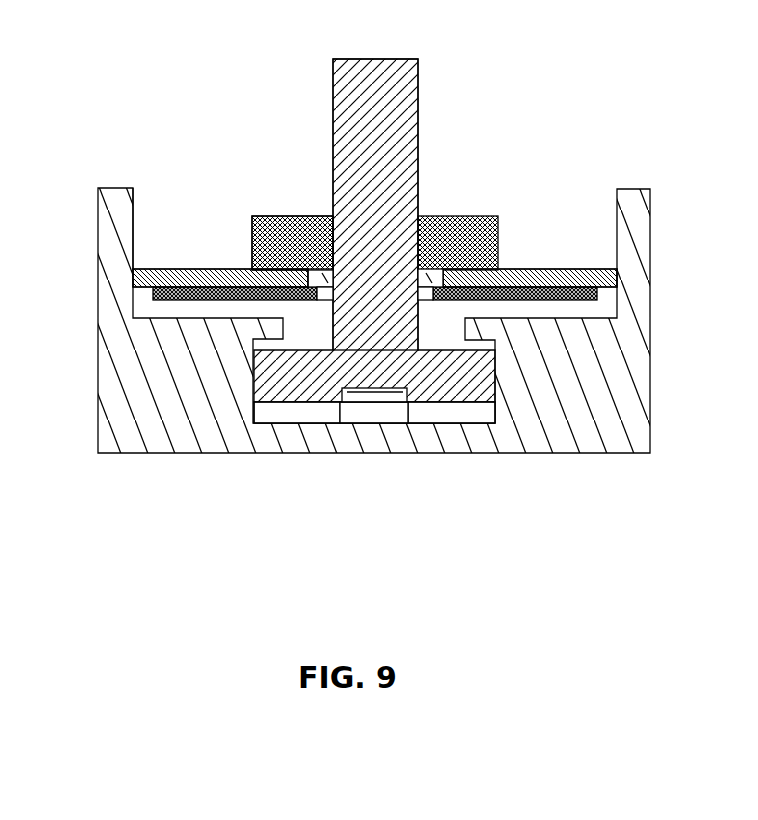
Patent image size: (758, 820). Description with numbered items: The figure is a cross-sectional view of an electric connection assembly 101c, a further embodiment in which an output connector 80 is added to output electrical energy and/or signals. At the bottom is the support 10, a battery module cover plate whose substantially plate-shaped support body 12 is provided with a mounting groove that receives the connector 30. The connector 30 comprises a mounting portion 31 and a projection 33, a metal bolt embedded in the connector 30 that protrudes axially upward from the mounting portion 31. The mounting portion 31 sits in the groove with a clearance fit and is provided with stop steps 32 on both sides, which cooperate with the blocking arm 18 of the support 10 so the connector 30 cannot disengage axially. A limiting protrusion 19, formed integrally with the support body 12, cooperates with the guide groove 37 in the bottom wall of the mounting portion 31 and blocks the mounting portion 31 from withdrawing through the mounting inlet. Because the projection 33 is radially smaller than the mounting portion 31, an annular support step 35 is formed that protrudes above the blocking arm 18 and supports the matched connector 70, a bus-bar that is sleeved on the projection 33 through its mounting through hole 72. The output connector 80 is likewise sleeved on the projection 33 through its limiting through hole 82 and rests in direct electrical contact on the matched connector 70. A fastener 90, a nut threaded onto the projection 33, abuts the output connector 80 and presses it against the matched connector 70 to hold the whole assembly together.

The electric connection assembly 101c is at (390, 30).
The limiting through hole 82 is at (418, 146).
The fastener 90 is at (468, 216).
The output connector 80 is at (587, 270).
The mounting through hole 72 is at (422, 280).
The matched connector 70 is at (547, 270).
The guide groove 37 is at (485, 263).
The projection 33 is at (332, 172).
The support step 35 is at (280, 240).
The stop step 32 is at (240, 270).
The mounting portion 31 is at (130, 228).
The connector 30 is at (242, 138).
The blocking arm 18 is at (273, 360).
The limiting protrusion 19 is at (370, 413).
The support body 12 is at (533, 430).
The support 10 is at (538, 522).